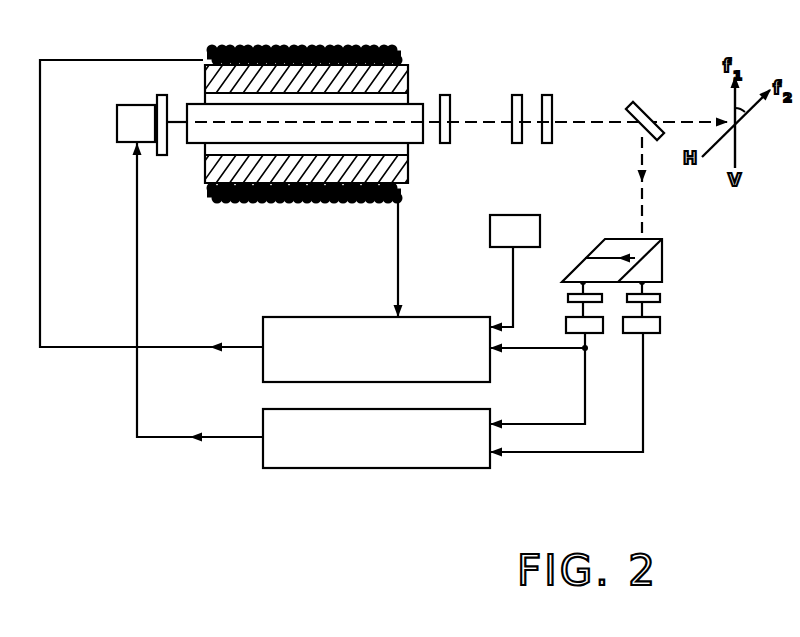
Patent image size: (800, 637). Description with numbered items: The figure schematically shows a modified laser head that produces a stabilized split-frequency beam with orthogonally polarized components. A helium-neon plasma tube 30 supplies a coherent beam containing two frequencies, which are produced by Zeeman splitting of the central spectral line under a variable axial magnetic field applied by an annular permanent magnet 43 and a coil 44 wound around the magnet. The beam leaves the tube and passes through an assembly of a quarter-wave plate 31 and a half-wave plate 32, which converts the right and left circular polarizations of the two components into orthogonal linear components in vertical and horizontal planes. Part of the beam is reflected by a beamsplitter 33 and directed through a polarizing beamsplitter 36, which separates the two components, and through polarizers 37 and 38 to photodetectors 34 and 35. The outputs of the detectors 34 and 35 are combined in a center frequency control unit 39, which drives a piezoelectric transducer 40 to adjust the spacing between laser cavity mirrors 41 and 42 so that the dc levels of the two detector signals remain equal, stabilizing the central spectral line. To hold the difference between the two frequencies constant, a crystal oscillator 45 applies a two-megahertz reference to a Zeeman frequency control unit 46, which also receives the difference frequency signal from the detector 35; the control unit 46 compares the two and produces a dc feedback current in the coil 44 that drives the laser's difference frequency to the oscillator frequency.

The plasma tube 30 is at (197, 104).
The quarter-wave plate 31 is at (515, 143).
The half-wave plate 32 is at (546, 143).
The beamsplitter 33 is at (650, 117).
The photodetector 34 is at (660, 330).
The photodetector 35 is at (594, 333).
The polarizing beamsplitter 36 is at (662, 260).
The polarizer 37 is at (660, 298).
The polarizer 38 is at (568, 298).
The center frequency control unit 39 is at (415, 468).
The piezoelectric transducer 40 is at (117, 125).
The laser cavity mirror 41 is at (160, 155).
The laser cavity mirror 42 is at (446, 95).
The annular permanent magnet 43 is at (408, 165).
The coil 44 is at (290, 46).
The crystal oscillator 45 is at (488, 232).
The Zeeman frequency control unit 46 is at (316, 317).